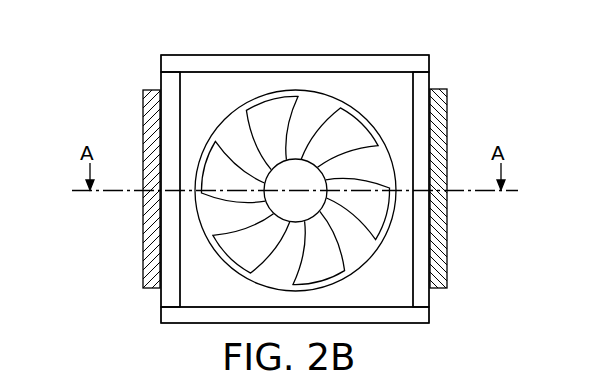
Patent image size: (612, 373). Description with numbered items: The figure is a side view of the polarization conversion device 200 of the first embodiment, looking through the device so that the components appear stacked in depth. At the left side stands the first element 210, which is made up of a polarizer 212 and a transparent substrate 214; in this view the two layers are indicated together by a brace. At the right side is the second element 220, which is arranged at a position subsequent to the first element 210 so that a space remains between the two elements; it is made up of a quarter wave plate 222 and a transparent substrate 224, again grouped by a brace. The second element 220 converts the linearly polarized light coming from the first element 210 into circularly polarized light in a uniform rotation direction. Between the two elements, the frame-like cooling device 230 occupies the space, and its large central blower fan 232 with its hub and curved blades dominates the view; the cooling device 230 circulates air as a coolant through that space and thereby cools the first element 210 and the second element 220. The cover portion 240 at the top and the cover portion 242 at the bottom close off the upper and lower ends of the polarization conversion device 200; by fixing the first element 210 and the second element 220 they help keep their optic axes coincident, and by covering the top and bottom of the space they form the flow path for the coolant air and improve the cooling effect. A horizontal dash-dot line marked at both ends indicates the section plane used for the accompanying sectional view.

The polarization conversion device 200 is at (514, 34).
The first element 210 is at (66, 86).
The polarizer 212 is at (143, 107).
The transparent substrate 214 is at (161, 78).
The second element 220 is at (524, 253).
The 1/4 wave plate 222 is at (447, 270).
The transparent substrate 224 is at (430, 298).
The cooling device 230 is at (195, 85).
The blower fan 232 is at (240, 251).
The cover portion 240 is at (430, 63).
The cover portion 242 is at (430, 320).